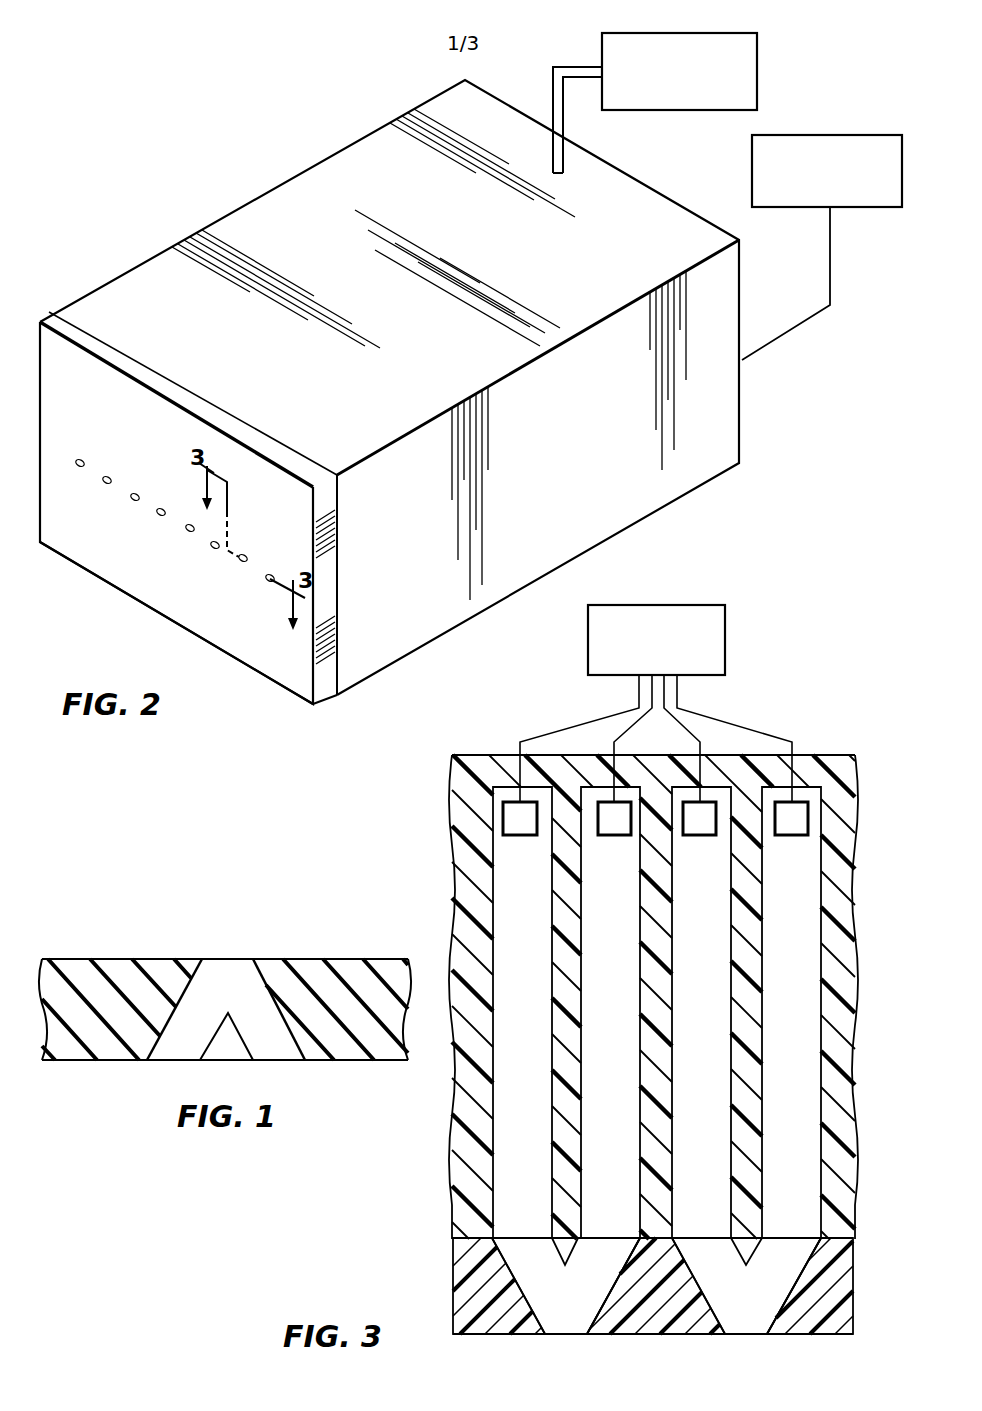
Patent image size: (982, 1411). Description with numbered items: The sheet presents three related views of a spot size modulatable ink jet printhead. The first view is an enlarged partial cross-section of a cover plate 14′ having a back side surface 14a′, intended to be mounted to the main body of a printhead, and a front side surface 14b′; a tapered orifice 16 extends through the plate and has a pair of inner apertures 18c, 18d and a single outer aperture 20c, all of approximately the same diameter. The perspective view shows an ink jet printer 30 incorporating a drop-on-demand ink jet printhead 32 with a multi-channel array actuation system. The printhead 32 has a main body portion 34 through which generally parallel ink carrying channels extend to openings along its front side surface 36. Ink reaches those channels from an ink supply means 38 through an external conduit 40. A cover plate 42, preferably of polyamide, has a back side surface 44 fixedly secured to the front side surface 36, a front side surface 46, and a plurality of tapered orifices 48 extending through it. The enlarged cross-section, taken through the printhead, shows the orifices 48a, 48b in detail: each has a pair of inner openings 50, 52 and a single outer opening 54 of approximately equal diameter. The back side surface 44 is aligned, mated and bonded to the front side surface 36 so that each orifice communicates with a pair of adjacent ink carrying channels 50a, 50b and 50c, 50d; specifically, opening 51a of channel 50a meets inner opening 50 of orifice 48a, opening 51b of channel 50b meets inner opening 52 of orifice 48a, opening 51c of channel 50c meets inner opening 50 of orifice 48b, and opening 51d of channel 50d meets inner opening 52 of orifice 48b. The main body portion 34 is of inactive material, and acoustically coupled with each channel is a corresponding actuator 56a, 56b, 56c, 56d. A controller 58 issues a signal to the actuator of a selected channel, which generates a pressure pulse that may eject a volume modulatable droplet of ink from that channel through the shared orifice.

In FIG. 1, the cover plate 14′ is at (42, 983).
In FIG. 1, the back side surface 14a′ is at (88, 1061).
In FIG. 1, the front side surface 14b′ is at (112, 958).
In FIG. 1, the tapered orifice 16 is at (213, 975).
In FIG. 1, the inner aperture 18c is at (305, 1061).
In FIG. 1, the inner aperture 18d is at (148, 1061).
In FIG. 1, the outer aperture 20c is at (255, 961).
In FIG. 2, the ink jet printer 30 is at (790, 98).
In FIG. 2, the ink jet printhead 32 is at (472, 75).
In FIG. 2, the main body portion 34 is at (267, 193).
In FIG. 2, the front side surface 36 is at (341, 566).
In FIG. 3, the front side surface 36 is at (854, 1222).
In FIG. 2, the ink supply means 38 is at (692, 110).
In FIG. 2, the external conduit 40 is at (564, 112).
In FIG. 2, the cover plate 42 is at (52, 312).
In FIG. 3, the cover plate 42 is at (453, 1278).
In FIG. 2, the back side surface 44 is at (103, 344).
In FIG. 3, the back side surface 44 is at (453, 1244).
In FIG. 2, the front side surface 46 is at (145, 385).
In FIG. 3, the front side surface 46 is at (470, 1335).
In FIG. 2, the tapered orifices 48 is at (106, 485).
In FIG. 3, the orifice 48a is at (574, 1342).
In FIG. 3, the orifice 48b is at (764, 1342).
In FIG. 3, the inner opening 50 is at (498, 1238).
In FIG. 3, the ink carrying channel 50a is at (541, 1014).
In FIG. 3, the ink carrying channel 50b is at (636, 1014).
In FIG. 3, the ink carrying channel 50c is at (721, 1014).
In FIG. 3, the ink carrying channel 50d is at (813, 1014).
In FIG. 3, the opening 51a is at (528, 1238).
In FIG. 3, the opening 51b is at (617, 1238).
In FIG. 3, the opening 51c is at (707, 1238).
In FIG. 3, the opening 51d is at (802, 1238).
In FIG. 3, the inner opening 52 is at (586, 1238).
In FIG. 3, the outer opening 54 is at (543, 1334).
In FIG. 3, the actuator 56a is at (517, 835).
In FIG. 3, the actuator 56b is at (611, 835).
In FIG. 3, the actuator 56c is at (696, 835).
In FIG. 3, the actuator 56d is at (788, 835).
In FIG. 2, the controller 58 is at (873, 208).
In FIG. 3, the controller 58 is at (726, 646).